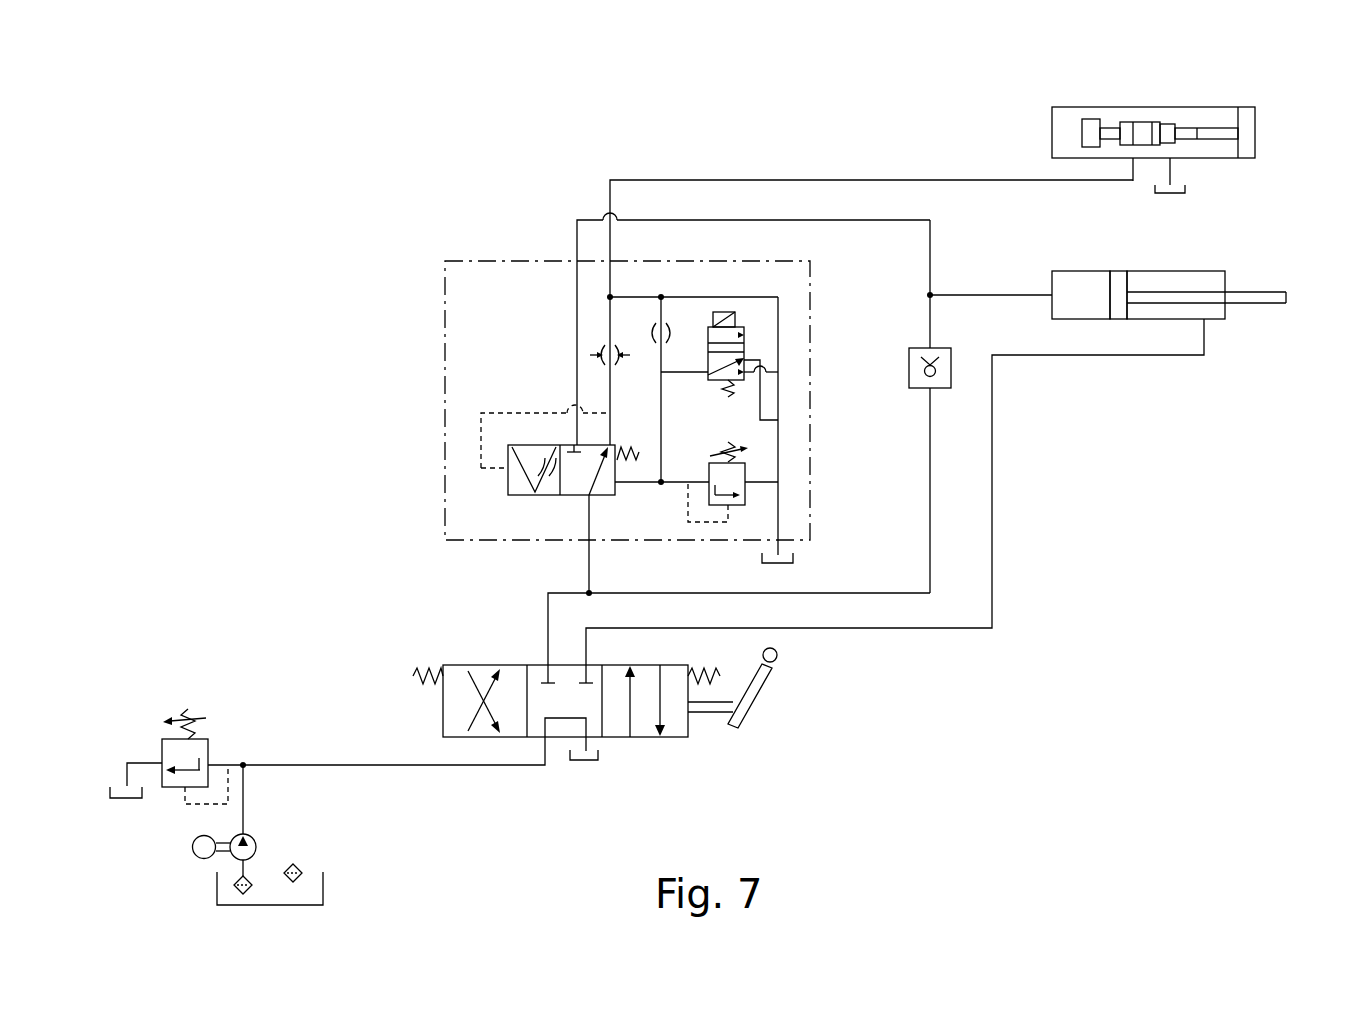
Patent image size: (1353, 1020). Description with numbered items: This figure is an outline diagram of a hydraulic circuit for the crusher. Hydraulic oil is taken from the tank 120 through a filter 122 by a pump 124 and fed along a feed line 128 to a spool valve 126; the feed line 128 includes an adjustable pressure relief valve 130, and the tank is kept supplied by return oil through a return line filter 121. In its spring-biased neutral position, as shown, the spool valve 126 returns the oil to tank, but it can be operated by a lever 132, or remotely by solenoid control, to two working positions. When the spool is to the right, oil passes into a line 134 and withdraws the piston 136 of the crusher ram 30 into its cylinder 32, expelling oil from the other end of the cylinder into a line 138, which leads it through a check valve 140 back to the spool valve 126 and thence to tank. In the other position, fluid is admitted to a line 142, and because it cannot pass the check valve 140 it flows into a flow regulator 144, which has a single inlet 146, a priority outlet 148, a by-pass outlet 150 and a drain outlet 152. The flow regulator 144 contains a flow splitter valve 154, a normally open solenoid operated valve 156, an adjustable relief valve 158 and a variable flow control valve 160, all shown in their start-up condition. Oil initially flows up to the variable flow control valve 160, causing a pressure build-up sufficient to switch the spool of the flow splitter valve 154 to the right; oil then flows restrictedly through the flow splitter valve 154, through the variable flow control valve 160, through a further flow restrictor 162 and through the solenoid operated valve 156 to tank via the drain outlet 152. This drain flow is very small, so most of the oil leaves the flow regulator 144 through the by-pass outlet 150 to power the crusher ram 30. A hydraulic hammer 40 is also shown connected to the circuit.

The crusher ram 30 is at (1193, 262).
The cylinder 32 is at (1078, 269).
The hydraulic hammer 40 is at (1159, 96).
The tank 120 is at (323, 892).
The return line filter 121 is at (303, 868).
The filter 122 is at (234, 885).
The pump 124 is at (251, 838).
The spool valve 126 is at (443, 710).
The feed line 128 is at (408, 766).
The adjustable pressure relief valve 130 is at (162, 748).
The lever 132 is at (757, 692).
The line 134 is at (948, 630).
The piston 136 is at (1118, 315).
The line 138 is at (928, 331).
The check valve 140 is at (909, 374).
The line 142 is at (545, 630).
The flow regulator 144 is at (445, 398).
The inlet 146 is at (592, 553).
The priority outlet 148 is at (612, 244).
The by-pass outlet 150 is at (575, 246).
The drain outlet 152 is at (782, 545).
The flow splitter valve 154 is at (522, 497).
The solenoid operated valve 156 is at (746, 335).
The adjustable relief valve 158 is at (706, 463).
The variable flow control valve 160 is at (601, 355).
The flow restrictor 162 is at (665, 330).